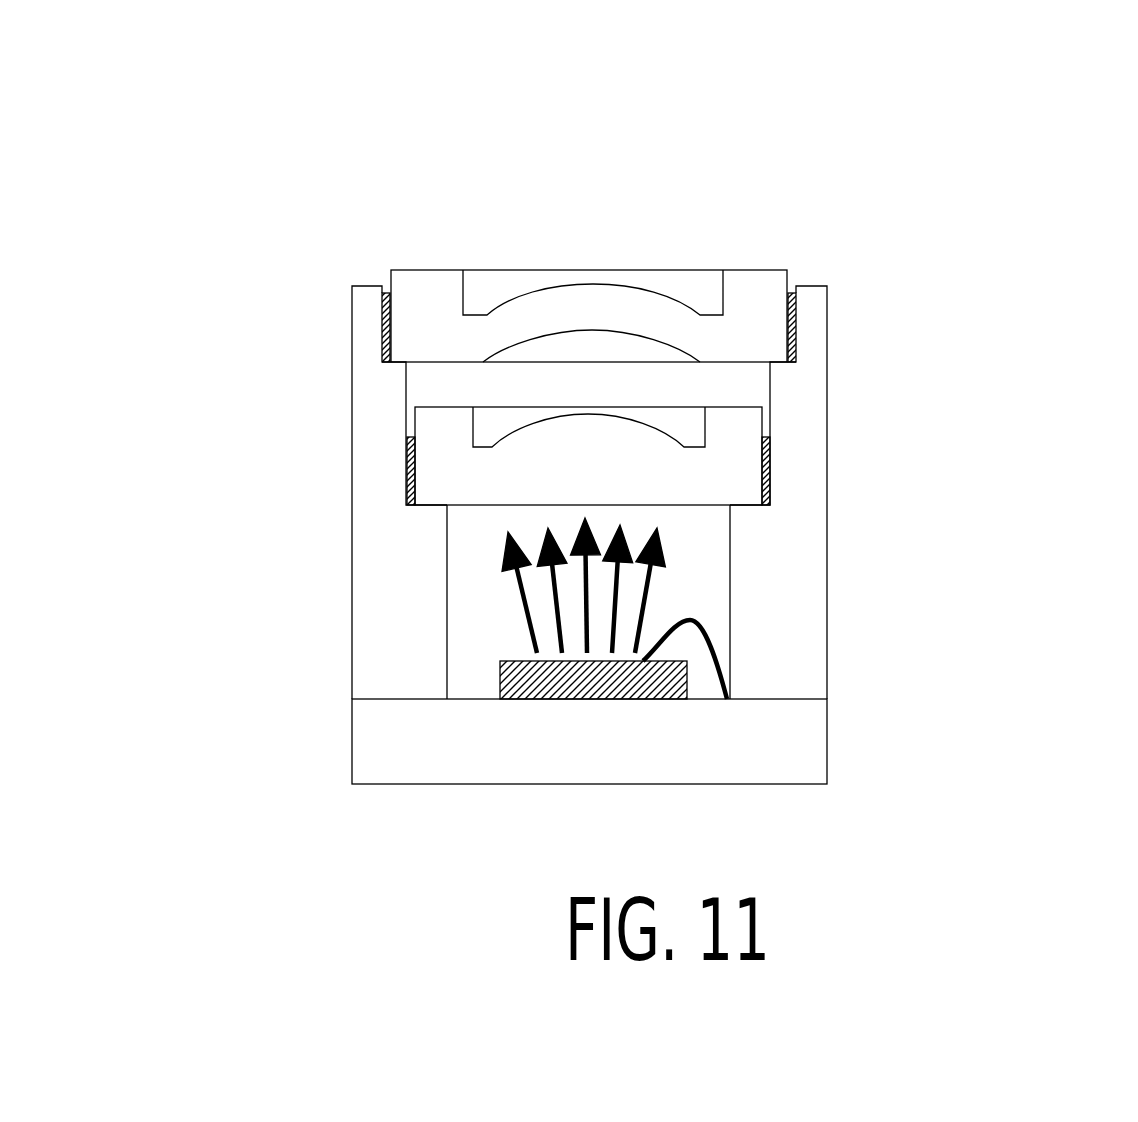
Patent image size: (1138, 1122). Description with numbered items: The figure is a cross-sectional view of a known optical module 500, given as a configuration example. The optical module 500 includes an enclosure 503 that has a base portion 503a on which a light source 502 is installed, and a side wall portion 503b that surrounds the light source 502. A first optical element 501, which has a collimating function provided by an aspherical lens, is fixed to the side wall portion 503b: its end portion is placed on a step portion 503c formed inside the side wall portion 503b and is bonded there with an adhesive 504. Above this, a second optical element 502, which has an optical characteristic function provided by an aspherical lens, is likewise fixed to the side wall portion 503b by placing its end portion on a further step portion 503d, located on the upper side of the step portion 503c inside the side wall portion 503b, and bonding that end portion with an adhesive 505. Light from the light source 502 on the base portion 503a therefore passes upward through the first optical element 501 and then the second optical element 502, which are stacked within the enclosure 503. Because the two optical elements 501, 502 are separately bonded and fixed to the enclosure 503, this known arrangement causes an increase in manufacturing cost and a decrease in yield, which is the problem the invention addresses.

The optical module 500 is at (781, 202).
The first optical element 501 is at (770, 437).
The light source 502 is at (789, 290).
The enclosure 503 is at (1027, 590).
The base portion 503a is at (828, 737).
The side wall portion 503b is at (828, 633).
The step portion 503c is at (445, 505).
The step portion 503d is at (395, 365).
The adhesive 504 is at (405, 465).
The adhesive 505 is at (380, 318).